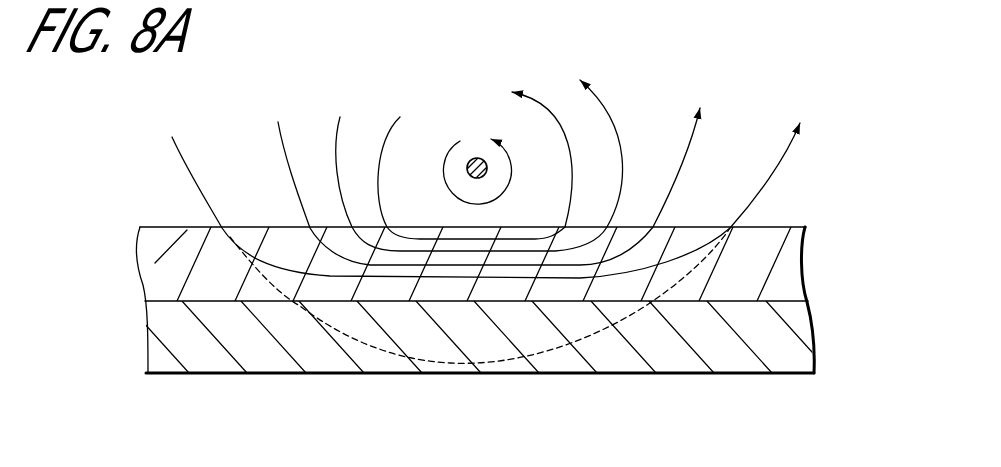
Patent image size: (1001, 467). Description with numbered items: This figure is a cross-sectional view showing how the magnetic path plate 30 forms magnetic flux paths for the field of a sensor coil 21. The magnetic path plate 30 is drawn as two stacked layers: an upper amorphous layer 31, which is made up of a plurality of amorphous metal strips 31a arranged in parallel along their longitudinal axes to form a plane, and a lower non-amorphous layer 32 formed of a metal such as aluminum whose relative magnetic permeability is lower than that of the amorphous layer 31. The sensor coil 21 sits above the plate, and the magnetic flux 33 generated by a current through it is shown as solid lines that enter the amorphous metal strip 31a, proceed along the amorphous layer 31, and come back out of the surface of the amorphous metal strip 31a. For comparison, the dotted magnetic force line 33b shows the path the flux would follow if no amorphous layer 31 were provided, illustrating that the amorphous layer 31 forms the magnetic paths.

The magnetic path plate 30 is at (106, 214).
The amorphous layer 31 is at (818, 262).
The amorphous metal strip 31a is at (155, 263).
The non-amorphous layer 32 is at (146, 331).
The magnetic flux 33 is at (180, 152).
The magnetic force line 33b is at (324, 323).
The sensor coil 21 is at (477, 157).